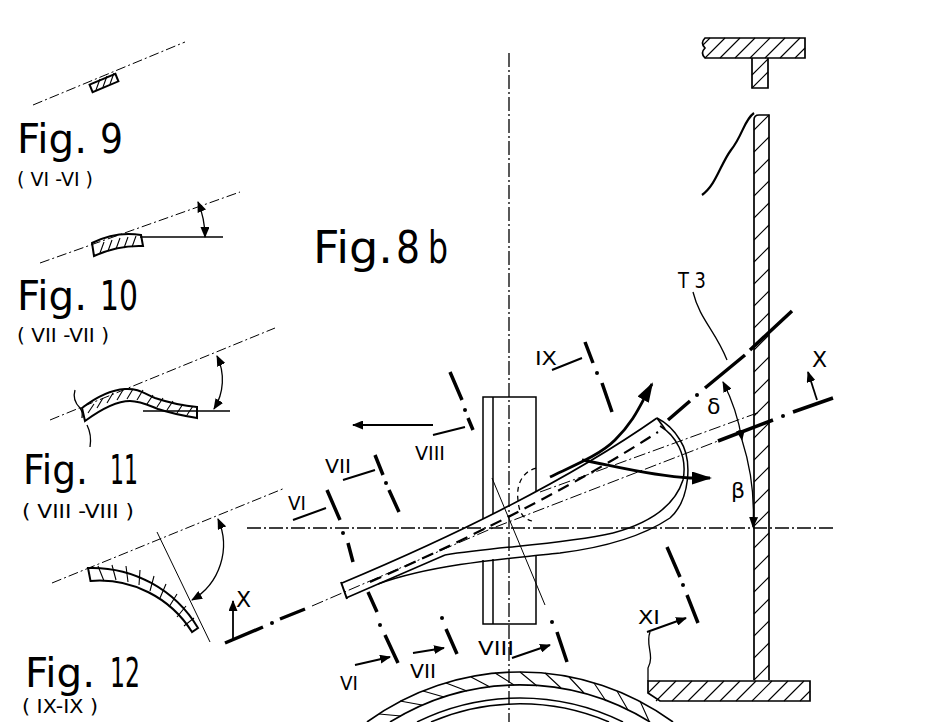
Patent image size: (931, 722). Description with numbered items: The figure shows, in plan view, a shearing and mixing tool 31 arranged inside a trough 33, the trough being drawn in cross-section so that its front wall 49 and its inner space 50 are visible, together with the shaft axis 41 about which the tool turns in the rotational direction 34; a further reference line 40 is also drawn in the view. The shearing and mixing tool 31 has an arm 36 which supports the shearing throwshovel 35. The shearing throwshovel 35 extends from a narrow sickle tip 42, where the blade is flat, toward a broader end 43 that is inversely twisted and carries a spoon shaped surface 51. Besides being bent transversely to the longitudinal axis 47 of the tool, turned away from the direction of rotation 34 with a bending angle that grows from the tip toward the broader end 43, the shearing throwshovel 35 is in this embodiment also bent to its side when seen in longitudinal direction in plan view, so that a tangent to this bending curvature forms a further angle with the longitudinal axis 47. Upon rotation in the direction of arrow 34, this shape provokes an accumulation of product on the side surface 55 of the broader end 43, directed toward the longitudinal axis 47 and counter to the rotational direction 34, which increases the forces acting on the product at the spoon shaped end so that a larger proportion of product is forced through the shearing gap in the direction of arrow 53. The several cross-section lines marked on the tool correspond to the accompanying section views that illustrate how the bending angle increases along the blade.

In FIG. 8B, the shearing and mixing tool 31 is at (568, 517).
In FIG. 8B, the trough 33 is at (765, 264).
In FIG. 8B, the rotational direction 34 is at (408, 424).
In FIG. 8B, the shearing throwshovel 35 is at (613, 508).
In FIG. 8B, the arm 36 is at (539, 468).
In FIG. 8B, the horizontal axis 40 is at (800, 527).
In FIG. 8B, the shaft axis 41 is at (512, 141).
In FIG. 8B, the sickle tip 42 is at (339, 596).
In FIG. 8B, the broader end 43 is at (664, 440).
In FIG. 8B, the longitudinal axis 47 is at (312, 605).
In FIG. 9, the longitudinal axis 47 is at (157, 52).
In FIG. 10, the longitudinal axis 47 is at (218, 189).
In FIG. 11, the longitudinal axis 47 is at (250, 333).
In FIG. 12, the longitudinal axis 47 is at (250, 498).
In FIG. 8B, the front wall 49 is at (726, 60).
In FIG. 8B, the inner space 50 is at (724, 199).
In FIG. 8B, the spoon shaped surface 51 is at (678, 518).
In FIG. 8B, the arrow 53 is at (659, 502).
In FIG. 8B, the side surface 55 is at (628, 425).
In FIG. 11, the side surface 55 is at (141, 405).
In FIG. 12, the side surface 55 is at (133, 585).